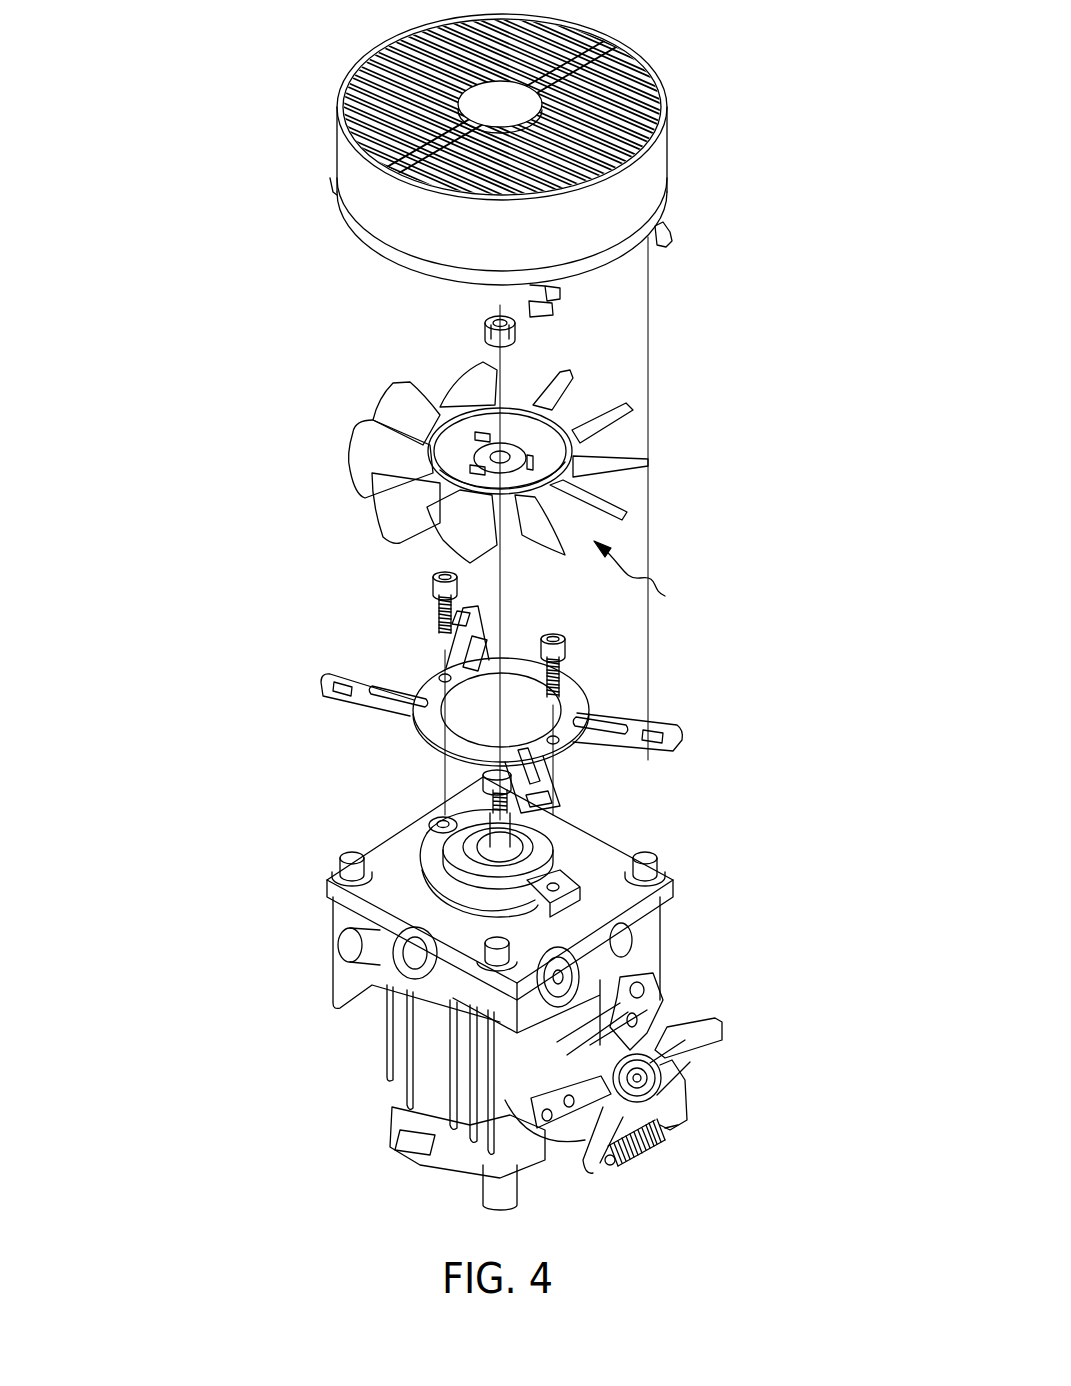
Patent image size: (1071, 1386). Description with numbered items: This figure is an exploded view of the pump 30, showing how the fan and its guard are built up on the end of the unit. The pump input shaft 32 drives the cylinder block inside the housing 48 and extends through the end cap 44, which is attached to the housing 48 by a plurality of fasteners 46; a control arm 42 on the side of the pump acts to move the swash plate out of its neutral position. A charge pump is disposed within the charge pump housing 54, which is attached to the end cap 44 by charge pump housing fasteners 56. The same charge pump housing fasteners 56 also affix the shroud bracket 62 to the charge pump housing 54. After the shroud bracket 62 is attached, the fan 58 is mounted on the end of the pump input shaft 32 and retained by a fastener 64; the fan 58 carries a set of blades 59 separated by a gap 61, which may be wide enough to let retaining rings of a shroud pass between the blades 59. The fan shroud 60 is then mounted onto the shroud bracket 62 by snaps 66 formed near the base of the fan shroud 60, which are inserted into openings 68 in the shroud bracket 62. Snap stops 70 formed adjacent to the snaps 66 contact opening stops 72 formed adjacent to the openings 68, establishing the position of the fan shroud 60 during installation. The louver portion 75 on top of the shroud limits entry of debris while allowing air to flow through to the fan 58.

The pump 30 is at (205, 799).
The pump input shaft 32 is at (465, 800).
The control arm 42 is at (655, 983).
The end cap 44 is at (330, 896).
The fasteners 46 is at (350, 852).
The housing 48 is at (390, 1070).
The charge pump housing 54 is at (575, 898).
The charge pump housing fasteners 56 is at (432, 585).
The fan 58 is at (424, 508).
The fan blades 59 is at (630, 468).
The fan shroud 60 is at (518, 249).
The gap 61 is at (645, 576).
The shroud bracket 62 is at (415, 733).
The fastener 64 is at (482, 333).
The snaps 66 is at (662, 244).
The openings 68 is at (345, 680).
The snap stops 70 is at (558, 294).
The opening stops 72 is at (670, 740).
The louver portion 75 is at (650, 78).